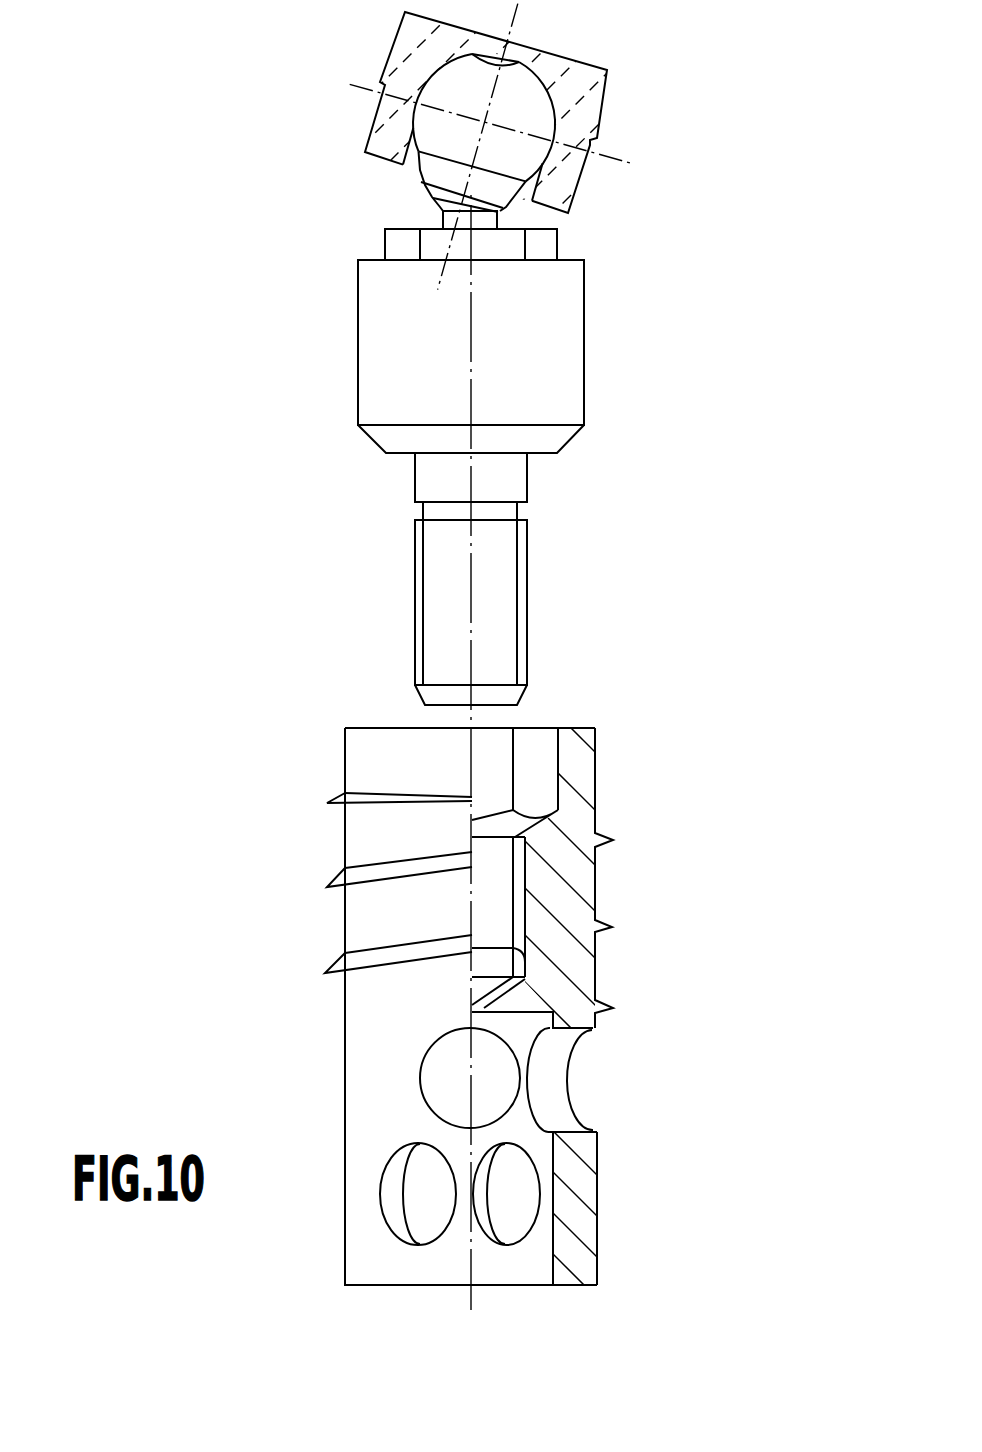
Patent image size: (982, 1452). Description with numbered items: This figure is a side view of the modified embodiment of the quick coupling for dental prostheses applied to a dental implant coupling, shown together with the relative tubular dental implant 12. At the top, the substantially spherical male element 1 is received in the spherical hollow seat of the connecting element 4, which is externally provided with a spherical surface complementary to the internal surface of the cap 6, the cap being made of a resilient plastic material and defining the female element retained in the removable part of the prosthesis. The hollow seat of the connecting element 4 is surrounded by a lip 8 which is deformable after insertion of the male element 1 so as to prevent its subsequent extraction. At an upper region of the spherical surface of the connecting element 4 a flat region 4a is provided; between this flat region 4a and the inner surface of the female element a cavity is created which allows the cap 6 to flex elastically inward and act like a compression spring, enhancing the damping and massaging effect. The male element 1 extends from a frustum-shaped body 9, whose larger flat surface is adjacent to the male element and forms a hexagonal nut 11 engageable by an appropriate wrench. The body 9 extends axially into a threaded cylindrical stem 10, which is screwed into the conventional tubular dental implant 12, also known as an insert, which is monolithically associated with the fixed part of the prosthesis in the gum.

The spherical male element 1 is at (448, 201).
The connecting element 4 is at (510, 143).
The flat region 4a is at (512, 62).
The cap 6 is at (403, 72).
The lip 8 is at (440, 170).
The frustum-shaped body 9 is at (400, 340).
The threaded cylindrical stem 10 is at (435, 473).
The hexagonal nut 11 is at (535, 253).
The tubular dental implant 12 is at (537, 1242).